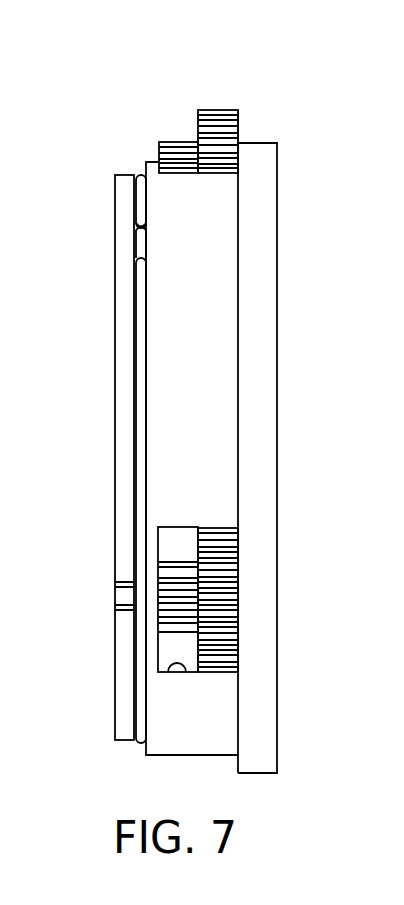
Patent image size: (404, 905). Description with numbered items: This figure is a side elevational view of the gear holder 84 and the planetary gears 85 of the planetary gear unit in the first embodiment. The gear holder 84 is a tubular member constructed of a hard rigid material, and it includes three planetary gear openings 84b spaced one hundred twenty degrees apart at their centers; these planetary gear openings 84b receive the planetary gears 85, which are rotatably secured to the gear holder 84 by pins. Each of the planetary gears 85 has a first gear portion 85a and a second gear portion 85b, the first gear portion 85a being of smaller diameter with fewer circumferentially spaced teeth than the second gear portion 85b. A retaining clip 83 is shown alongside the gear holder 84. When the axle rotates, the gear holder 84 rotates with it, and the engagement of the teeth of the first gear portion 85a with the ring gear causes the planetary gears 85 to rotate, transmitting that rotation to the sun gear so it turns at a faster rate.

The retaining clip 83 is at (142, 207).
The gear holder 84 is at (294, 122).
The planetary gear openings 84b is at (185, 665).
The planetary gears 85 is at (178, 355).
The first gear portion 85a is at (173, 142).
The second gear portion 85b is at (222, 110).